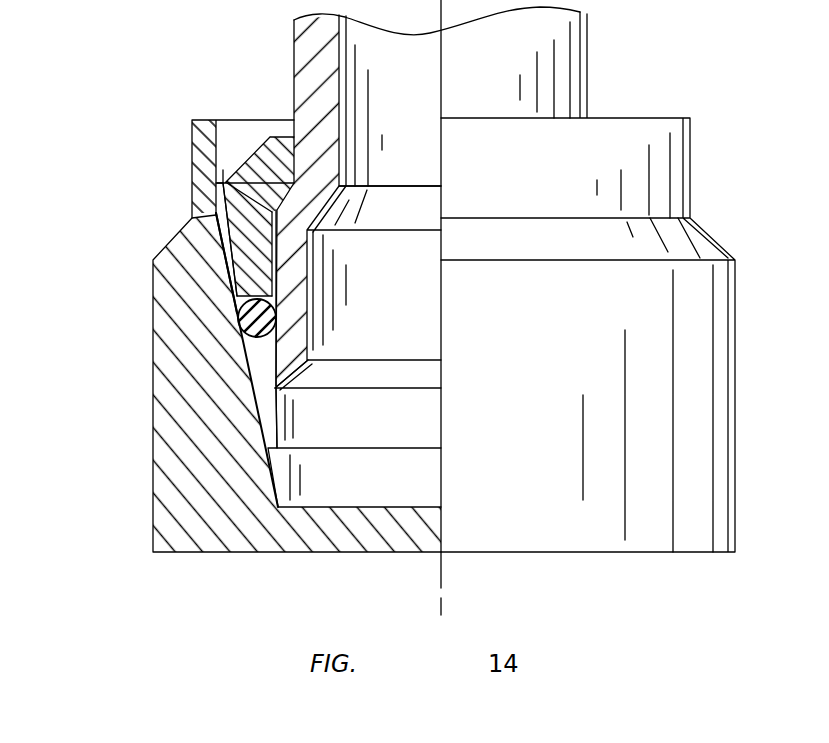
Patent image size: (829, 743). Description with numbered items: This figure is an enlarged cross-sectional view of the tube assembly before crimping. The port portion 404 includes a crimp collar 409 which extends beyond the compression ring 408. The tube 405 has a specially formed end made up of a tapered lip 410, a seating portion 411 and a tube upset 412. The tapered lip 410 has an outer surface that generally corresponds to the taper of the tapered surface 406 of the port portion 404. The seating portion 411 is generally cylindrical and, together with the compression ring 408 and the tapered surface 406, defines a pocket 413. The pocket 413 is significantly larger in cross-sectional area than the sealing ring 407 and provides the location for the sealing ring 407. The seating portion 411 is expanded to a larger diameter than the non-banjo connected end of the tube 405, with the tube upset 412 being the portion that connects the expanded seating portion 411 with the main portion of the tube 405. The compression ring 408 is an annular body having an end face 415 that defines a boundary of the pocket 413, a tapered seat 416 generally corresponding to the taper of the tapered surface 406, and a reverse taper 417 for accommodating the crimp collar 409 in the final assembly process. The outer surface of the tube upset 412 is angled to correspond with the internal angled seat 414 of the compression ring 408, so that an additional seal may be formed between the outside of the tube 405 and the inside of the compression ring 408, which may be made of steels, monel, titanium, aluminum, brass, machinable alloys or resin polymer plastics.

The port portion 404 is at (170, 488).
The tube 405 is at (302, 62).
The tapered surface 406 is at (255, 358).
The sealing ring 407 is at (241, 322).
The compression ring 408 is at (240, 208).
The crimp collar 409 is at (197, 132).
The tapered lip 410 is at (261, 410).
The seating portion 411 is at (274, 302).
The tube upset 412 is at (278, 200).
The pocket 413 is at (270, 361).
The internal angled seat 414 is at (218, 178).
The end face 415 is at (256, 279).
The tapered seat 416 is at (221, 286).
The reverse taper 417 is at (245, 145).